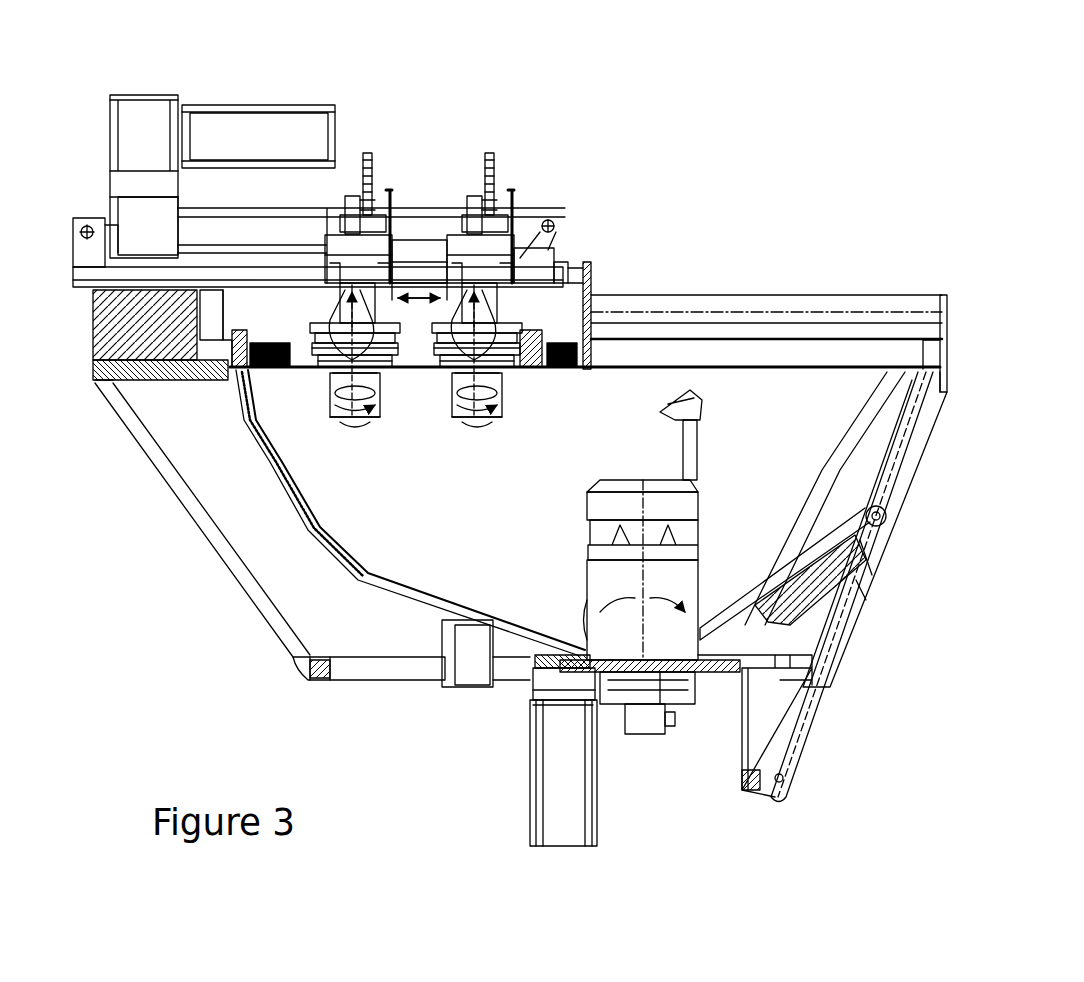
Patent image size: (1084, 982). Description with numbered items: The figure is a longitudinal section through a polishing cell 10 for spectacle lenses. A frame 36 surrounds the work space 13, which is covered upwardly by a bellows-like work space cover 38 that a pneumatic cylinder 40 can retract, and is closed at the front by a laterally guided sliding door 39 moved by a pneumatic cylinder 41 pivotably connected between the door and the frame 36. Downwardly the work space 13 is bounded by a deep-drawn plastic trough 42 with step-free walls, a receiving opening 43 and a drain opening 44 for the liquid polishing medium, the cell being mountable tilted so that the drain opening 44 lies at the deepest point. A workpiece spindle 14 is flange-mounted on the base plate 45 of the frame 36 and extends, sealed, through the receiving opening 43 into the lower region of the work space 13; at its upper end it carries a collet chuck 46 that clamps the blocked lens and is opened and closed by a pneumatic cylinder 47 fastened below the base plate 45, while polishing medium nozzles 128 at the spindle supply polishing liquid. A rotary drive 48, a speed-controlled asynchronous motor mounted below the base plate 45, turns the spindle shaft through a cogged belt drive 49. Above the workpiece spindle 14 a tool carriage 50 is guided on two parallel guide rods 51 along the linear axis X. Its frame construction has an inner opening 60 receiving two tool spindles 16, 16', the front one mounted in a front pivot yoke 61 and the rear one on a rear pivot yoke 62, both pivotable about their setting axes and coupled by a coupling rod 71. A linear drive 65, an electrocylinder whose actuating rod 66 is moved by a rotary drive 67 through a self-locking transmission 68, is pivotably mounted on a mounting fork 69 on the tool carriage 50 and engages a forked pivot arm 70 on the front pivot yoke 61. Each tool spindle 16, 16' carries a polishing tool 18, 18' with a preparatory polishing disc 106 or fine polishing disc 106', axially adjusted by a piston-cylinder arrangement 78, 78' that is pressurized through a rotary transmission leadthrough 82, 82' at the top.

The polishing cell 10 is at (472, 75).
The work space 13 is at (504, 515).
The workpiece spindle 14 is at (614, 595).
The tool spindle 16 is at (463, 368).
The tool spindle 16' is at (332, 363).
The polishing tool 18 is at (492, 416).
The polishing tool 18' is at (340, 419).
The frame 36 is at (535, 664).
The work space cover 38 is at (608, 395).
The sliding door 39 is at (770, 580).
The pneumatic cylinder 40 is at (572, 270).
The pneumatic cylinder 41 is at (792, 737).
The trough 42 is at (348, 549).
The receiving opening 43 is at (590, 612).
The drain opening 44 is at (455, 690).
The base plate 45 is at (337, 668).
The collet chuck 46 is at (606, 482).
The pneumatic cylinder 47 is at (640, 735).
The rotary drive 48 is at (576, 780).
The cogged belt drive 49 is at (590, 690).
The tool carriage 50 is at (287, 300).
The guide rods 51 is at (765, 312).
The inner opening 60 is at (314, 366).
The front pivot yoke 61 is at (520, 250).
The rear pivot yoke 62 is at (405, 262).
The linear drive 65 is at (180, 100).
The actuating rod 66 is at (553, 230).
The rotary drive 67 is at (288, 154).
The transmission 68 is at (152, 247).
The mounting fork 69 is at (84, 224).
The forked pivot arm 70 is at (562, 262).
The coupling rod 71 is at (420, 295).
The piston-cylinder arrangement 78 is at (503, 214).
The piston-cylinder arrangement 78' is at (333, 229).
The rotary transmission leadthrough 82 is at (485, 174).
The rotary transmission leadthrough 82' is at (350, 193).
The polishing disc 106 is at (477, 440).
The polishing disc 106' is at (369, 440).
The polishing medium nozzles 128 is at (672, 410).